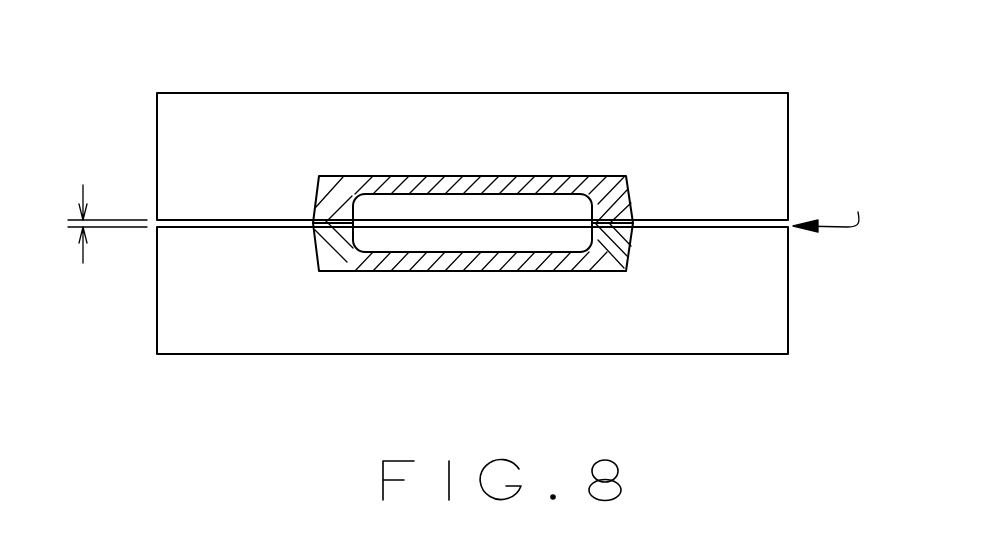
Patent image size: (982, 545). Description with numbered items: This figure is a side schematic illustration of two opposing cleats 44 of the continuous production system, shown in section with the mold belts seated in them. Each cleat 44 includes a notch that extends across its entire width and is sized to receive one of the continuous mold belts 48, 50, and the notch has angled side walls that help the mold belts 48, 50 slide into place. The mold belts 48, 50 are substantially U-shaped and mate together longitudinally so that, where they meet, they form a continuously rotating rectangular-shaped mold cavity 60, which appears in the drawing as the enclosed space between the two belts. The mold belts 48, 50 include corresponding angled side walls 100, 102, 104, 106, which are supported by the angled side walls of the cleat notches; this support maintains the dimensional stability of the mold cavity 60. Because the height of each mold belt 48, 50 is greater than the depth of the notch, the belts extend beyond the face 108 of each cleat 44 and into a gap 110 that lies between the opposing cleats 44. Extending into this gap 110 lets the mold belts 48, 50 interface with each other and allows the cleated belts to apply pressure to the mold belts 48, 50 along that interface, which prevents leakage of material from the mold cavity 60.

The cleat 44 is at (788, 153).
The continuous mold belt 48 is at (340, 262).
The continuous mold belt 50 is at (343, 186).
The mold cavity 60 is at (512, 222).
The angled side wall 100 is at (313, 219).
The angled side wall 102 is at (630, 199).
The angled side wall 104 is at (317, 250).
The angled side wall 106 is at (630, 255).
The face of cleat 108 is at (194, 219).
The gap 110 is at (834, 208).